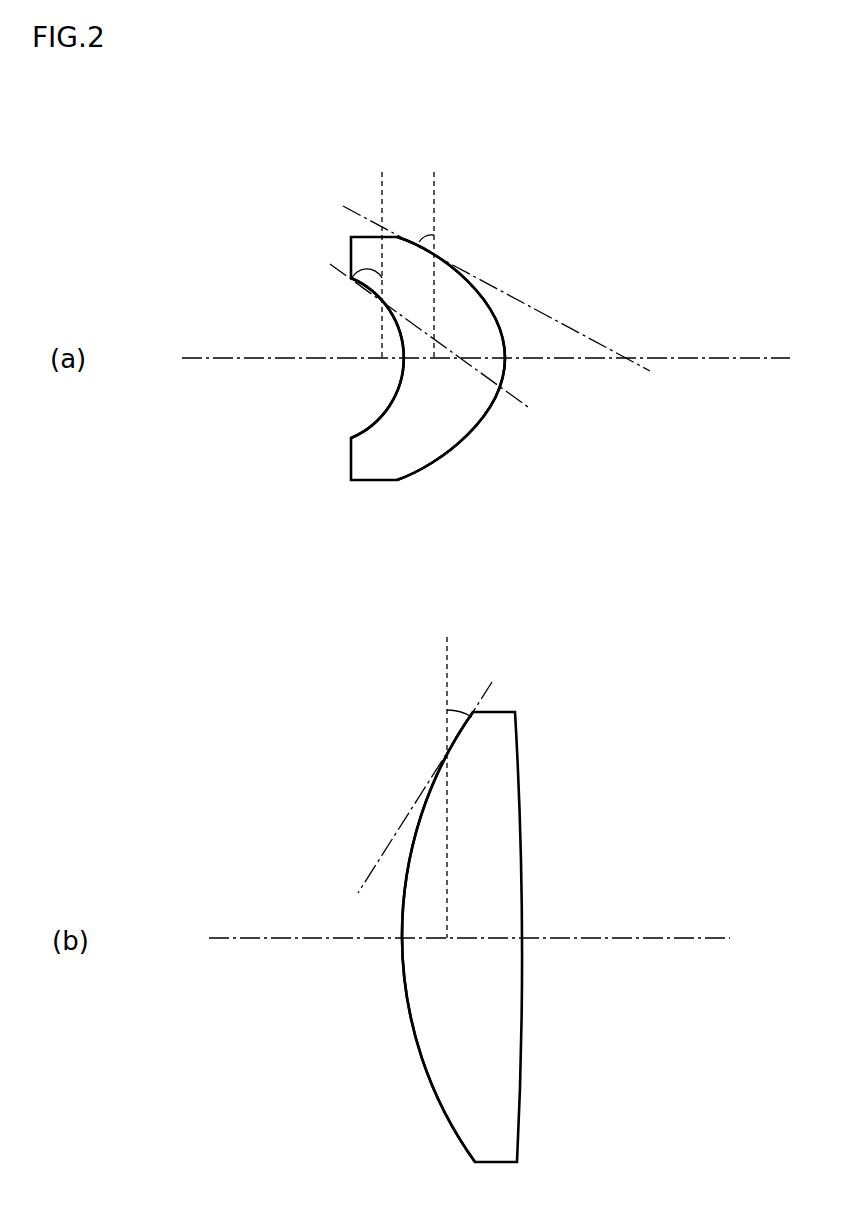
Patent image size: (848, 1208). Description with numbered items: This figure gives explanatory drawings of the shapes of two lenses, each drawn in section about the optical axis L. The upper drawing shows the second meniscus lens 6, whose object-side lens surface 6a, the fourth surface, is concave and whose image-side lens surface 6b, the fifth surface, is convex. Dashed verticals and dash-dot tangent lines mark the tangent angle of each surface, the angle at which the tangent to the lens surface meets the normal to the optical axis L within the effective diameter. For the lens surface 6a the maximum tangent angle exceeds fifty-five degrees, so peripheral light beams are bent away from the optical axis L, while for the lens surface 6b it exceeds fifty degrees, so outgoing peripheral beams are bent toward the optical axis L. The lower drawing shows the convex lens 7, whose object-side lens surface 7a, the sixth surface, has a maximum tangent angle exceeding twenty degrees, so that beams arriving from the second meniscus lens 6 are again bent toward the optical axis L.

The second meniscus lens 6 is at (520, 185).
The lens surface 6a is at (384, 413).
The lens surface 6b is at (455, 447).
The convex lens 7 is at (537, 705).
The lens surface 7a is at (432, 1087).
The optical axis L is at (698, 358).